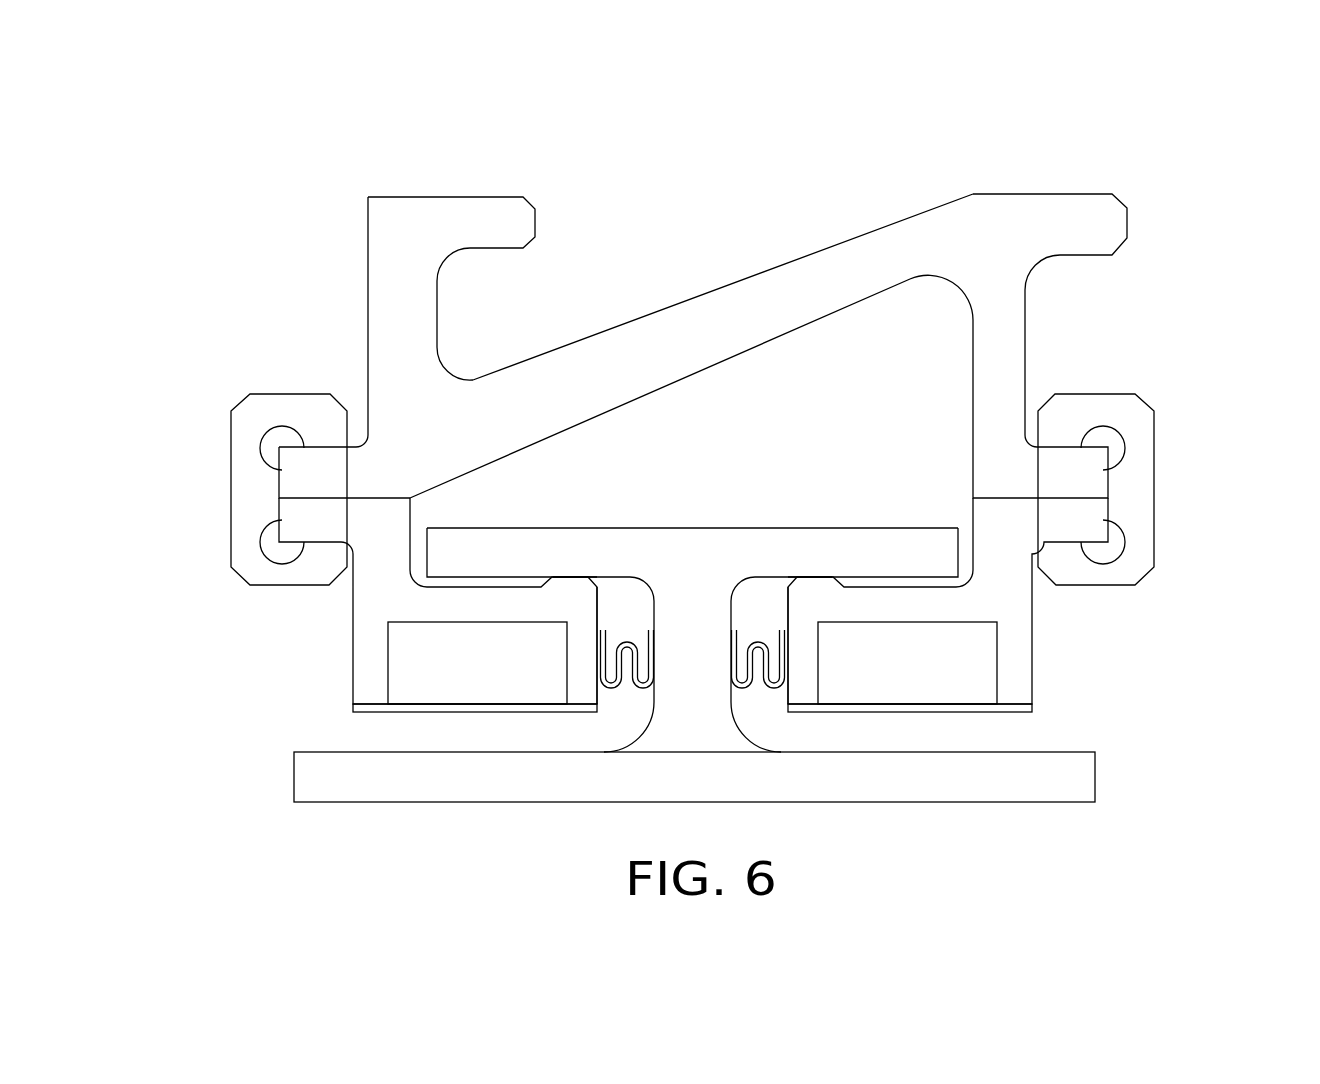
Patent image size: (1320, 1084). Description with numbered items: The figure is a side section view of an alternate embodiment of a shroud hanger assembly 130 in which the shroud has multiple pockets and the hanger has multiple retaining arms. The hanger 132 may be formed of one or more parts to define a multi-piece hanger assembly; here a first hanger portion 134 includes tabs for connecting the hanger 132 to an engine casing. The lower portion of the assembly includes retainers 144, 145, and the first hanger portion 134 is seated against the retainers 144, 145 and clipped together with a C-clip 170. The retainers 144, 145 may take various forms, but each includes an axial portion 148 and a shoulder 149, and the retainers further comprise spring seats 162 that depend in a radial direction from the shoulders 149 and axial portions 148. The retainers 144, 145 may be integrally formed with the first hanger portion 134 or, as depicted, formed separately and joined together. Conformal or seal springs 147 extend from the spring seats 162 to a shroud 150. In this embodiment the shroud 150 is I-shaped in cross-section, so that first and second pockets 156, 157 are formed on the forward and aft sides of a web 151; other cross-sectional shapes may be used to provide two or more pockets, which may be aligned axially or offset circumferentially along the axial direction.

The shroud hanger assembly 130 is at (1137, 164).
The hanger 132 is at (678, 283).
The first hanger portion 134 is at (345, 307).
The retainer 144 is at (346, 668).
The retainer 145 is at (1036, 634).
The seal springs 147 is at (627, 698).
The axial portion 148 is at (482, 585).
The shoulder 149 is at (574, 577).
The shroud 150 is at (698, 505).
The web 151 is at (693, 733).
The first pocket 156 is at (462, 728).
The second pocket 157 is at (858, 734).
The spring seats 162 is at (580, 662).
The C-clip 170 is at (216, 480).